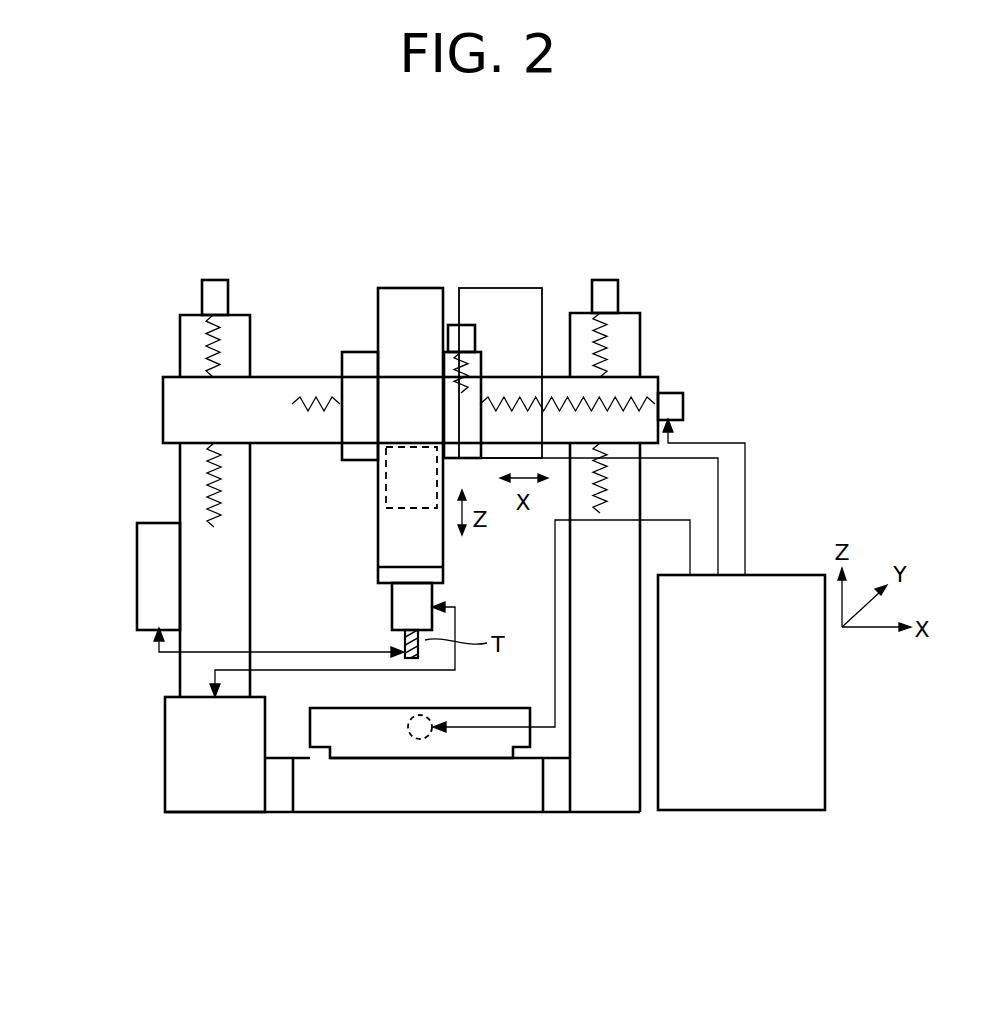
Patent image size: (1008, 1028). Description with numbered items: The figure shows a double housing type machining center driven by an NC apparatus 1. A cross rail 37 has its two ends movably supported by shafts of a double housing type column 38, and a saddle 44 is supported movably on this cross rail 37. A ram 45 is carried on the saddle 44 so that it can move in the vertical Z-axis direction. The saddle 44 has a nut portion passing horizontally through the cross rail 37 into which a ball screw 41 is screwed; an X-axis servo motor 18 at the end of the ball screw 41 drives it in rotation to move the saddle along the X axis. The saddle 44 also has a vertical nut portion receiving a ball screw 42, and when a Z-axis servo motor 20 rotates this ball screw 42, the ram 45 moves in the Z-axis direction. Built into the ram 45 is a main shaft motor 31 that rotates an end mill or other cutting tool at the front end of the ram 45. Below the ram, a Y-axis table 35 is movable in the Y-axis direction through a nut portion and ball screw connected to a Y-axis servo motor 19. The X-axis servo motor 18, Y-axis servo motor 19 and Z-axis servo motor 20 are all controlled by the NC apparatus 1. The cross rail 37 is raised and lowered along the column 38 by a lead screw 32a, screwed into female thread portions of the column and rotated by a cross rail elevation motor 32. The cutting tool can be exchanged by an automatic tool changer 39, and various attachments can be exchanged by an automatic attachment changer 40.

The NC apparatus 1 is at (735, 812).
The X-axis servo motor 18 is at (683, 405).
The Y-axis servo motor 19 is at (420, 740).
The Z-axis servo motor 20 is at (460, 313).
The main shaft motor 31 is at (413, 447).
The cross rail elevation motor 32 is at (220, 280).
The lead screw 32a is at (210, 343).
The Y-axis table 35 is at (482, 758).
The cross rail 37 is at (163, 417).
The double housing type column 38 is at (193, 490).
The automatic tool changer (ATC) 39 is at (137, 597).
The automatic attachment changer (AAC) 40 is at (165, 755).
The ball screw 41 is at (612, 400).
The ball screw 42 is at (482, 373).
The saddle 44 is at (357, 350).
The ram 45 is at (378, 540).